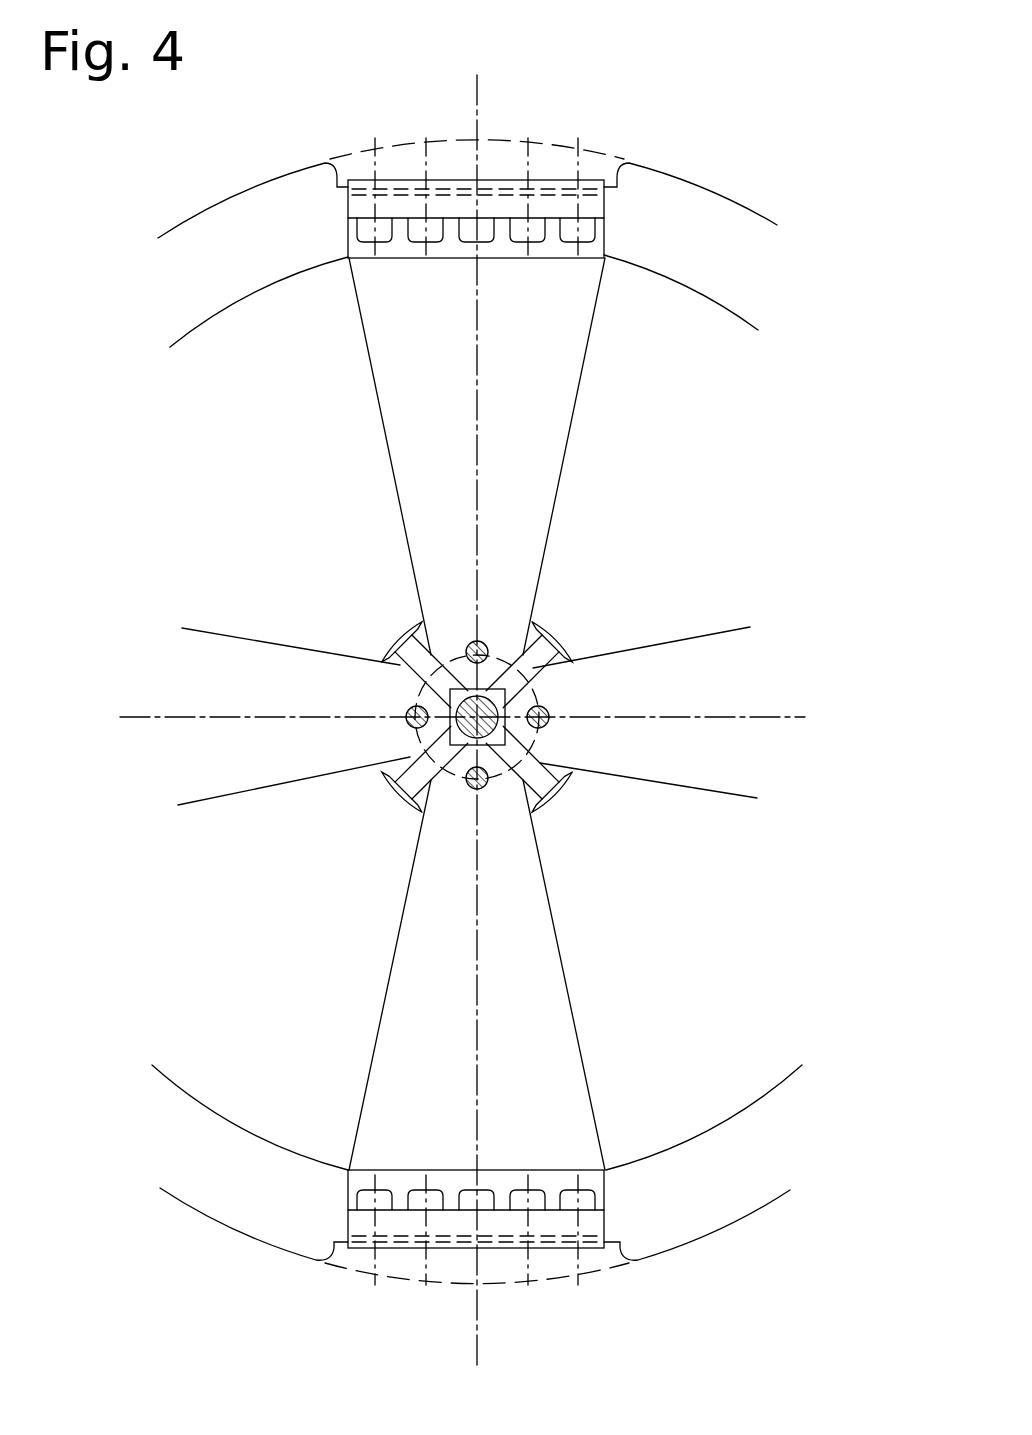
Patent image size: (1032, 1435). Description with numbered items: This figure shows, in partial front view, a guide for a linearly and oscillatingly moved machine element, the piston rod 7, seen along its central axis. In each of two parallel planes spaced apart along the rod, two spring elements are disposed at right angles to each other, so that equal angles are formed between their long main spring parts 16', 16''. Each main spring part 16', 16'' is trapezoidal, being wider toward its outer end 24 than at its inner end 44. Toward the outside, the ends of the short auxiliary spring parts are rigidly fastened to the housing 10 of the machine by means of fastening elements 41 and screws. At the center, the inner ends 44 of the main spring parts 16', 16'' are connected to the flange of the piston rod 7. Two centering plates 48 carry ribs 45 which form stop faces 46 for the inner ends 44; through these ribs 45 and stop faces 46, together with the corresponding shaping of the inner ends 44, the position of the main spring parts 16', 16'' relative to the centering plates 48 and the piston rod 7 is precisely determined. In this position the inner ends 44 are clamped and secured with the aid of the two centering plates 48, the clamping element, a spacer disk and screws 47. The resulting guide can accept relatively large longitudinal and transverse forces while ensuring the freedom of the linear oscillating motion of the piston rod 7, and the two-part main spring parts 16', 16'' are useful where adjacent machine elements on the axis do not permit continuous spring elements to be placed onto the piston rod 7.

The housing 10 is at (248, 237).
The outer end 24 is at (345, 305).
The fastening element 41 is at (604, 210).
The main spring part 16' is at (619, 456).
The main spring part 16'' is at (633, 975).
The piston rod 7 is at (448, 737).
The inner end 44 is at (405, 634).
The rib 45 is at (547, 785).
The stop face 46 is at (520, 742).
The screw 47 is at (408, 717).
The centering plate 48 is at (568, 657).